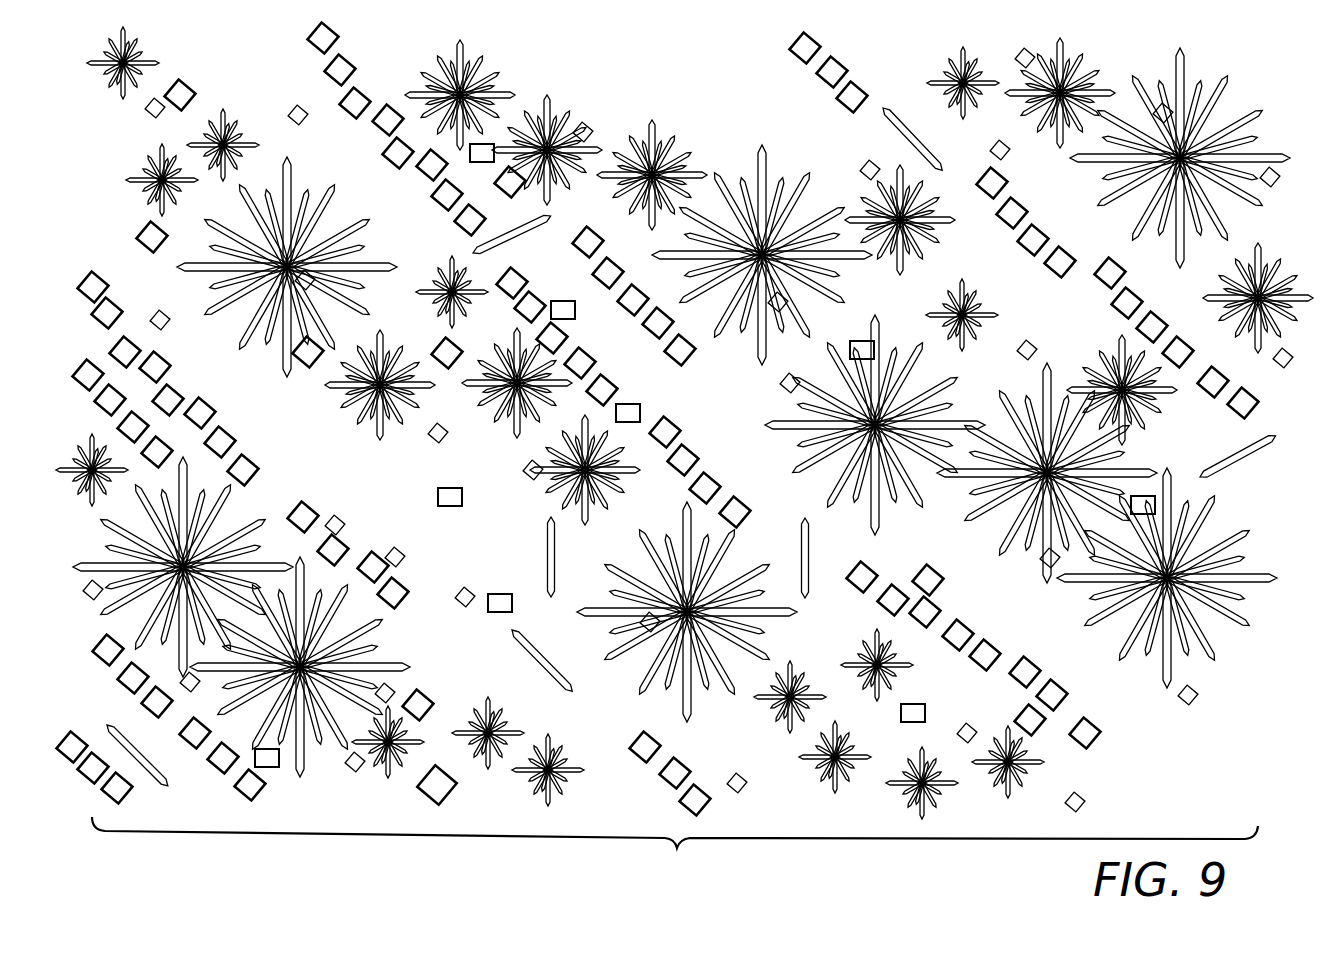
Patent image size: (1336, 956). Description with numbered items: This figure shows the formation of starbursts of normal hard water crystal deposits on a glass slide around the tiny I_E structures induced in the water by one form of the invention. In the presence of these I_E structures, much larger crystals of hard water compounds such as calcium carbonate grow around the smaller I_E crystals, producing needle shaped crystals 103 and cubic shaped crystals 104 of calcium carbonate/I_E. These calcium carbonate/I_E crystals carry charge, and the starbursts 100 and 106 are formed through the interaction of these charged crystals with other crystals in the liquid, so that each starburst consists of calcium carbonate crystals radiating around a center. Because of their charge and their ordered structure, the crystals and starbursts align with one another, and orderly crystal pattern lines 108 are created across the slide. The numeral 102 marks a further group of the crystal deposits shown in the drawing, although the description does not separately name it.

The starburst 100 is at (1080, 65).
The chain of rhombic crystals 102 is at (377, 127).
The needle shaped calcium carbonate/I_E crystal 103 is at (893, 133).
The cubic shaped calcium carbonate/I_E crystal 104 is at (1222, 373).
The starburst 106 is at (988, 317).
The crystal pattern lines 108 is at (428, 598).